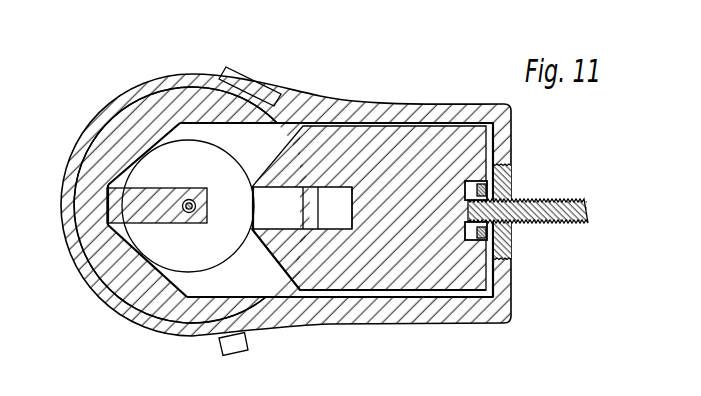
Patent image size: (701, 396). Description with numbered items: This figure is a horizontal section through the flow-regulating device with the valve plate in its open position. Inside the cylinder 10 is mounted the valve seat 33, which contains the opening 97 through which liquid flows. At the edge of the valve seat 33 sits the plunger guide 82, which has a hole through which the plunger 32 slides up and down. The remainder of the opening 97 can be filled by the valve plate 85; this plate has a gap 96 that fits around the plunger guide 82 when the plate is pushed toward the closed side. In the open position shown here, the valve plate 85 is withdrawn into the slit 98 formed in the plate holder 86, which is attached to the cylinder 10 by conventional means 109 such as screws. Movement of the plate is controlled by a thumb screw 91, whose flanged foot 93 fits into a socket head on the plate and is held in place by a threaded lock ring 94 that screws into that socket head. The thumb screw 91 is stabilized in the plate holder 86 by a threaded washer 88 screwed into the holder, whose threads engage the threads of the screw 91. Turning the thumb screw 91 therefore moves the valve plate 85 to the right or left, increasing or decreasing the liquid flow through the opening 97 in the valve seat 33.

The cylinder 10 is at (95, 280).
The valve seat 33 is at (97, 250).
The opening 97 is at (187, 122).
The conventional means 109 is at (237, 78).
The plate holder 86 is at (333, 103).
The valve plate 85 is at (403, 277).
The flanged foot 93 is at (470, 213).
The slit 98 is at (403, 127).
The gap 96 is at (285, 217).
The plunger guide 82 is at (135, 195).
The plunger 32 is at (187, 224).
The threaded washer 88 is at (502, 181).
The thumb screw 91 is at (557, 205).
The threaded lock ring 94 is at (486, 235).